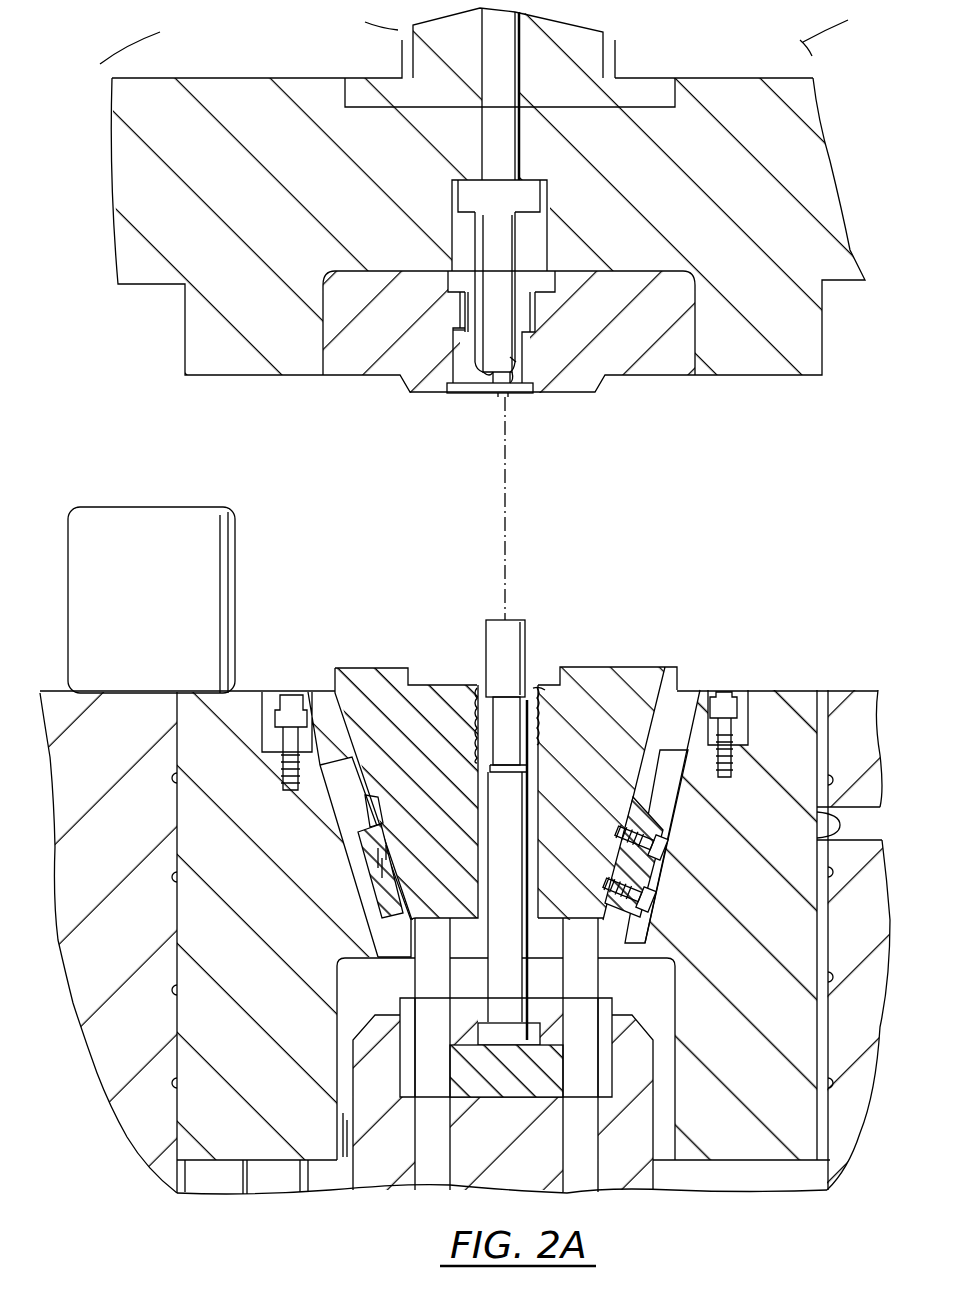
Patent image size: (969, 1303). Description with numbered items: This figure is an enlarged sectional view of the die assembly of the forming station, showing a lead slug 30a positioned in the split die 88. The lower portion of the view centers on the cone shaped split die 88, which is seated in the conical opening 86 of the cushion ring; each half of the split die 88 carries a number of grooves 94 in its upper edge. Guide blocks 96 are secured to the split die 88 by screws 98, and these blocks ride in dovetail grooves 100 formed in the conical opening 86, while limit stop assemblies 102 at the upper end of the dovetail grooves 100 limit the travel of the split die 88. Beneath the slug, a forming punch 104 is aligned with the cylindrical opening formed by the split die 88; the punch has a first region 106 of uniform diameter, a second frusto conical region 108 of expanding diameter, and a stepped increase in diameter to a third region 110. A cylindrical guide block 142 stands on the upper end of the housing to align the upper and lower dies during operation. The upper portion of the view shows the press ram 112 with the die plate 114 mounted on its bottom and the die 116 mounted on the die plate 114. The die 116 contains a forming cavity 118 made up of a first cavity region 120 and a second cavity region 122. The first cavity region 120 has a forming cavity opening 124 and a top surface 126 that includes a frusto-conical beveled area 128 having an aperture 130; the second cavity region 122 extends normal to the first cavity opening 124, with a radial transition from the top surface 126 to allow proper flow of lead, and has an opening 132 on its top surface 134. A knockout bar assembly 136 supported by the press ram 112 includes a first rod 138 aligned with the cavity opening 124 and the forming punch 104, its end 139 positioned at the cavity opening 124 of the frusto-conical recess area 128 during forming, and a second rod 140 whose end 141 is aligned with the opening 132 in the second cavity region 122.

The workpiece stud 30a is at (512, 620).
The conical opening 86 is at (345, 810).
The split die 88 is at (356, 668).
The grooves 94 is at (535, 692).
The guide blocks 96 is at (640, 882).
The screws 98 is at (650, 856).
The dovetail grooves 100 is at (682, 785).
The limit stop assemblies 102 is at (692, 702).
The forming punch 104 is at (512, 815).
The first region 106 is at (500, 715).
The second frusto conical region 108 is at (487, 767).
The third region 110 is at (488, 775).
The press ram 112 is at (805, 47).
The die plate 114 is at (830, 190).
The die 116 is at (665, 372).
The forming cavity 118 is at (437, 404).
The first cavity region 120 is at (510, 382).
The second cavity region 122 is at (452, 378).
The forming cavity opening 124 is at (513, 396).
The top surface 126 is at (513, 360).
The frusto-conical beveled area 128 is at (520, 372).
The aperture 130 is at (500, 396).
The opening 132 is at (460, 357).
The top surface 134 is at (465, 327).
The knockout bar assembly 136 is at (520, 186).
The first rod 138 is at (505, 232).
The end 139 is at (518, 345).
The second rod 140 is at (467, 222).
The end 141 is at (469, 325).
The cylindrical guide blocks 142 is at (218, 556).